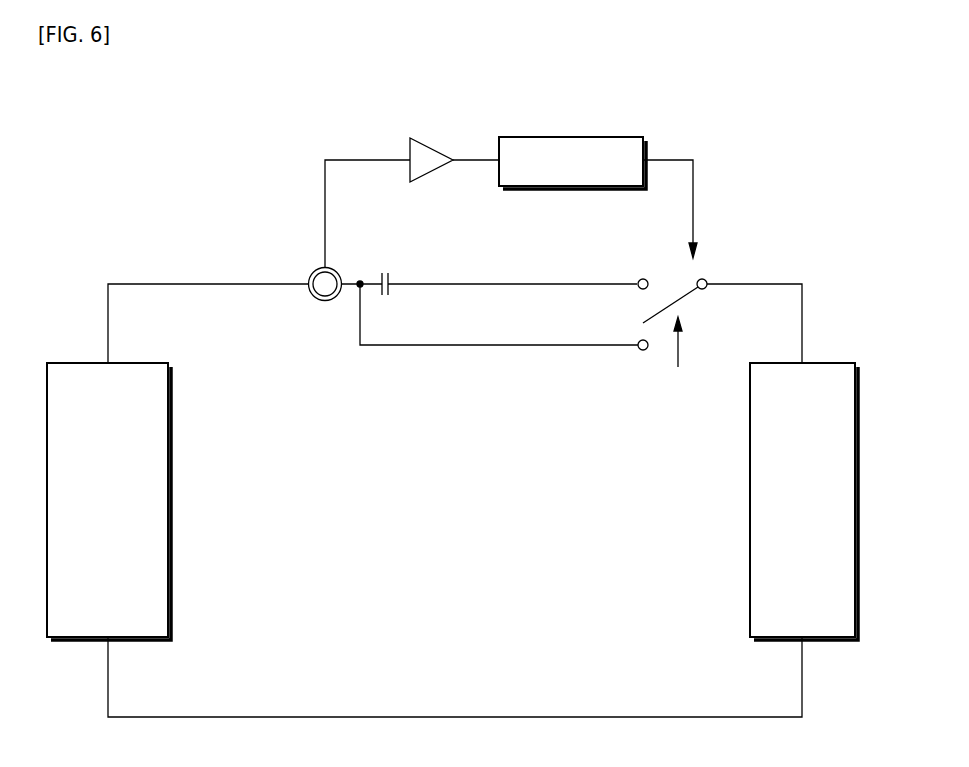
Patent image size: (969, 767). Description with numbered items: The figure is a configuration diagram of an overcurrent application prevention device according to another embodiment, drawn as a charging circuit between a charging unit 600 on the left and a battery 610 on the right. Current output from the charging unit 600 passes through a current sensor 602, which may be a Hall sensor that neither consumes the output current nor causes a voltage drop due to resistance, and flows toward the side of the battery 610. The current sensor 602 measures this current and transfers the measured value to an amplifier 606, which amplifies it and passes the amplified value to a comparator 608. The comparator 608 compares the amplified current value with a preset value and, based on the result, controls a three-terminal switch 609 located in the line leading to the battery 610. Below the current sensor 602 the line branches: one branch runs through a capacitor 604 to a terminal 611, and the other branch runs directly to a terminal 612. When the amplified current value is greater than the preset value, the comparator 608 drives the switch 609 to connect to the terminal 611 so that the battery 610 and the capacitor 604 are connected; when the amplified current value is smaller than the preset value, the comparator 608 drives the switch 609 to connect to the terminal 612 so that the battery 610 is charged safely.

The charging unit 600 is at (144, 363).
The current sensor 602 is at (325, 301).
The capacitor 604 is at (391, 294).
The amplifier 606 is at (430, 150).
The comparator 608 is at (570, 137).
The 3-terminal switch 609 is at (678, 367).
The battery 610 is at (838, 363).
The terminal 611 is at (642, 279).
The terminal 612 is at (643, 350).